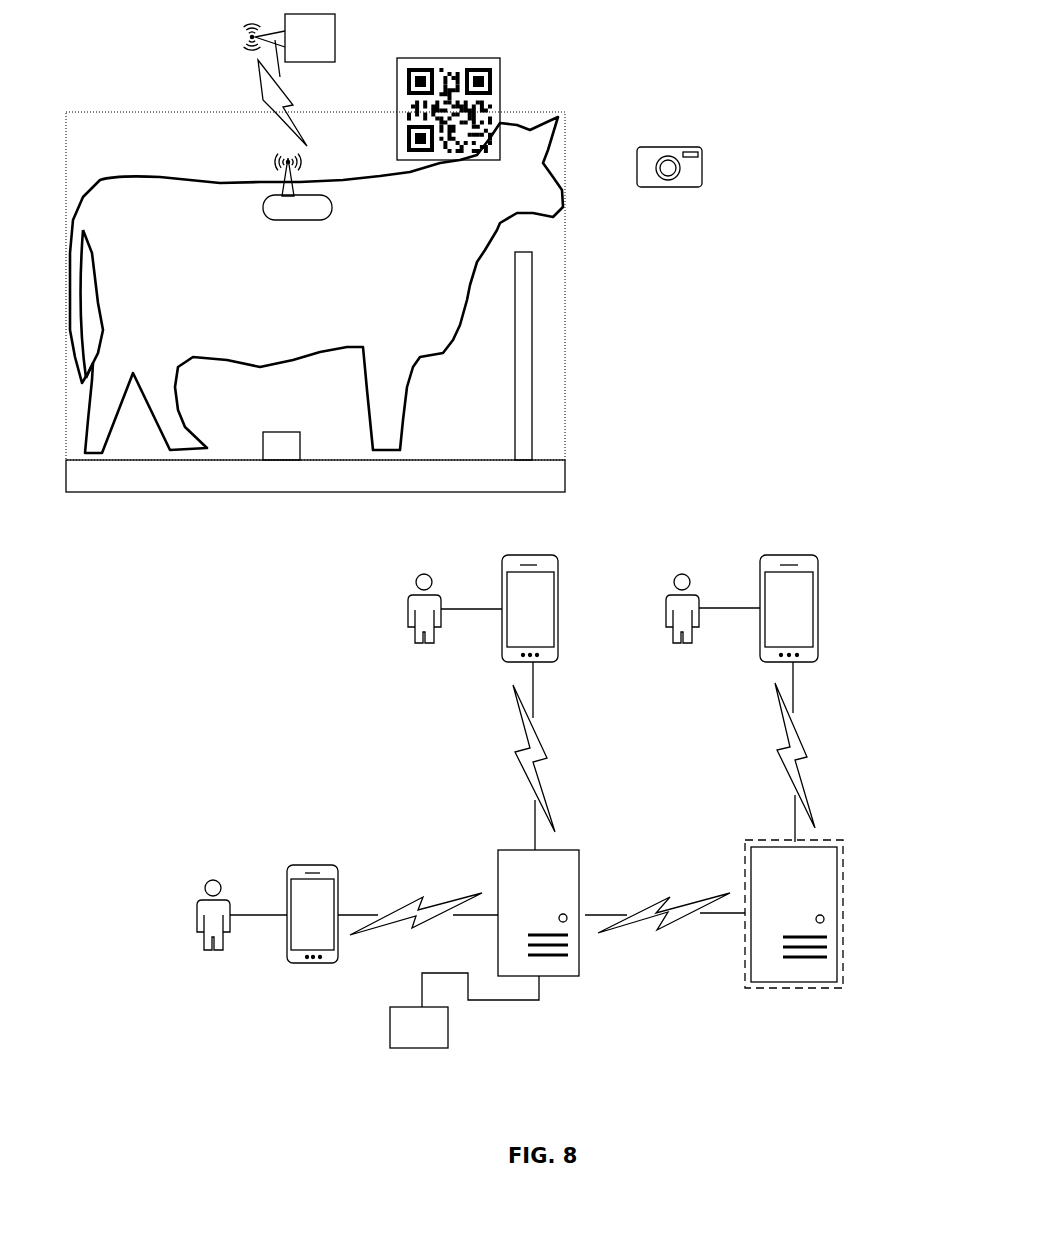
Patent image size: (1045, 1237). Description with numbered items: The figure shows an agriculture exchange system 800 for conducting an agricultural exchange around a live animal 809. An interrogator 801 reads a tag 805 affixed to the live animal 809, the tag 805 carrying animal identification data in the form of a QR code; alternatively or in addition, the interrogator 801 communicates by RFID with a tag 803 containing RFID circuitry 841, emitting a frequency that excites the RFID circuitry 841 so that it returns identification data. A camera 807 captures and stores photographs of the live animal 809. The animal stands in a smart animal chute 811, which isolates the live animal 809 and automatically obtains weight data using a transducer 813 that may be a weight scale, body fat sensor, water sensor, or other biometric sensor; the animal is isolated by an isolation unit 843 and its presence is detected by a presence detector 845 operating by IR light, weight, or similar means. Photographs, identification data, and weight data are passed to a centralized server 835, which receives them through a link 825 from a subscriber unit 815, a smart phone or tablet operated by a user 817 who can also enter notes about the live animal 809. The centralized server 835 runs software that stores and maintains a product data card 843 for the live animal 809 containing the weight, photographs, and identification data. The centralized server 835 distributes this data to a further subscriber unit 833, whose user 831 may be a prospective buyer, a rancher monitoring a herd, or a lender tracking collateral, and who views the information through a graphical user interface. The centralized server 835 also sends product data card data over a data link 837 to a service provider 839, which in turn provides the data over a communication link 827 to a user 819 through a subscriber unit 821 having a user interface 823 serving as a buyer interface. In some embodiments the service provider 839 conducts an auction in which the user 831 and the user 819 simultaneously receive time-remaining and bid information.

The agriculture exchange system 800 is at (628, 47).
The interrogator 801 is at (330, 62).
The tag 803 is at (322, 220).
The tag 805 is at (470, 160).
The camera 807 is at (695, 187).
The live animal 809 is at (453, 350).
The smart animal chute 811 is at (565, 350).
The transducer 813 is at (565, 482).
The subscriber unit 815 is at (558, 568).
The user 817 is at (419, 643).
The user 819 is at (677, 643).
The subscriber unit 821 is at (822, 608).
The user interface 823 is at (798, 622).
The link 825 is at (547, 760).
The communication link 827 is at (807, 757).
The user 831 is at (210, 950).
The subscriber unit 833 is at (338, 953).
The centralized server 835 is at (579, 965).
The data link 837 is at (660, 930).
The service provider 839 is at (843, 892).
The RFID circuitry 841 is at (305, 163).
The product data card 843 is at (515, 438).
The presence detector 845 is at (263, 440).